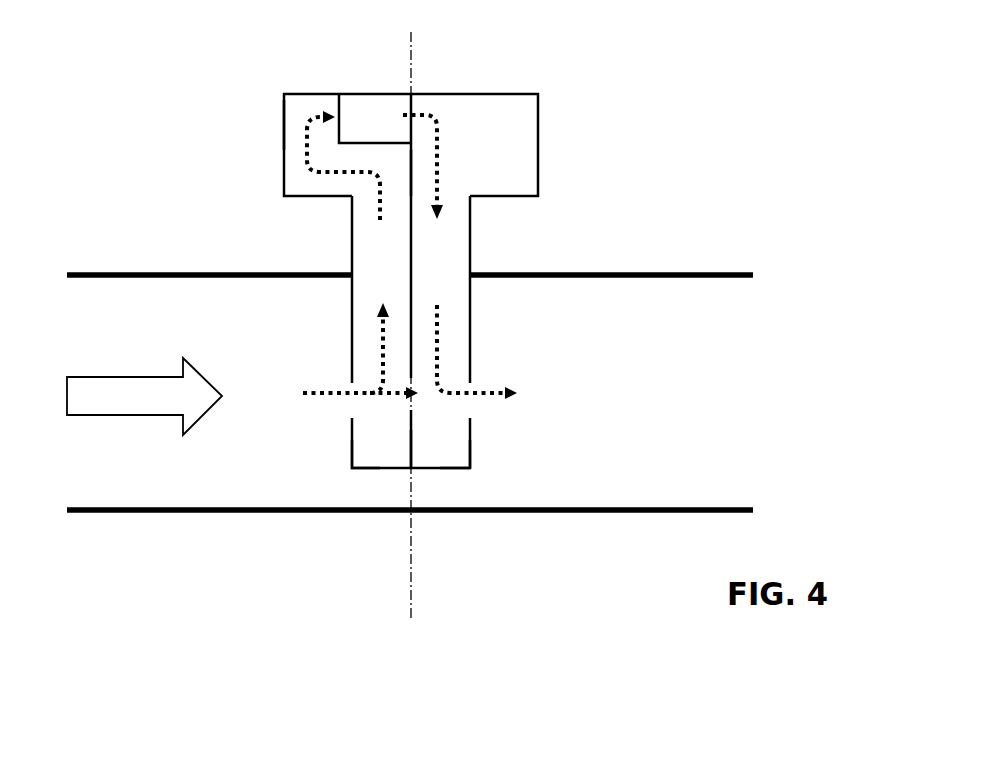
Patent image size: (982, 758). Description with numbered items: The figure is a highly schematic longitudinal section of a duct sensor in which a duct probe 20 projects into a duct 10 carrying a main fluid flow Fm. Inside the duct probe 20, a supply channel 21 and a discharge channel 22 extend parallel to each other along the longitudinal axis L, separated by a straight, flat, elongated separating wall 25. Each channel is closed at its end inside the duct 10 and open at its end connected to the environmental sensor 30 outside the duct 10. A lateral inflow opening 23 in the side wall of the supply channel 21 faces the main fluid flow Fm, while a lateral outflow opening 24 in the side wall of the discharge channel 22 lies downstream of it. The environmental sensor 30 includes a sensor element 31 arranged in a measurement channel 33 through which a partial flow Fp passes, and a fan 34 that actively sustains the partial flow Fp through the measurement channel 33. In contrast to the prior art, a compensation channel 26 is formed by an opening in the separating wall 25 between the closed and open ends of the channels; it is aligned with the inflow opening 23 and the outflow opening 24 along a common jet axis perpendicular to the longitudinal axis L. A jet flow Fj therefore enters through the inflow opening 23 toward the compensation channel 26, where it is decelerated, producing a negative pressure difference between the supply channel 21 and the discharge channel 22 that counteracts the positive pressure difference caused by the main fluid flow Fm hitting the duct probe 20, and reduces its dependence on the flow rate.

The duct 10 is at (699, 325).
The duct probe 20 is at (318, 247).
The supply channel 21 is at (360, 462).
The discharge channel 22 is at (447, 457).
The lateral inflow opening 23 is at (352, 402).
The lateral outflow opening 24 is at (467, 407).
The separating wall 25 is at (410, 237).
The compensation channel 26 is at (409, 402).
The environmental sensor 30 is at (260, 142).
The sensor element 31 is at (392, 134).
The measurement channel 33 is at (295, 108).
The fan 34 is at (494, 161).
The main fluid flow Fm is at (103, 393).
The partial flow Fp is at (440, 125).
The jet flow Fj is at (400, 393).
The longitudinal axis L is at (411, 601).